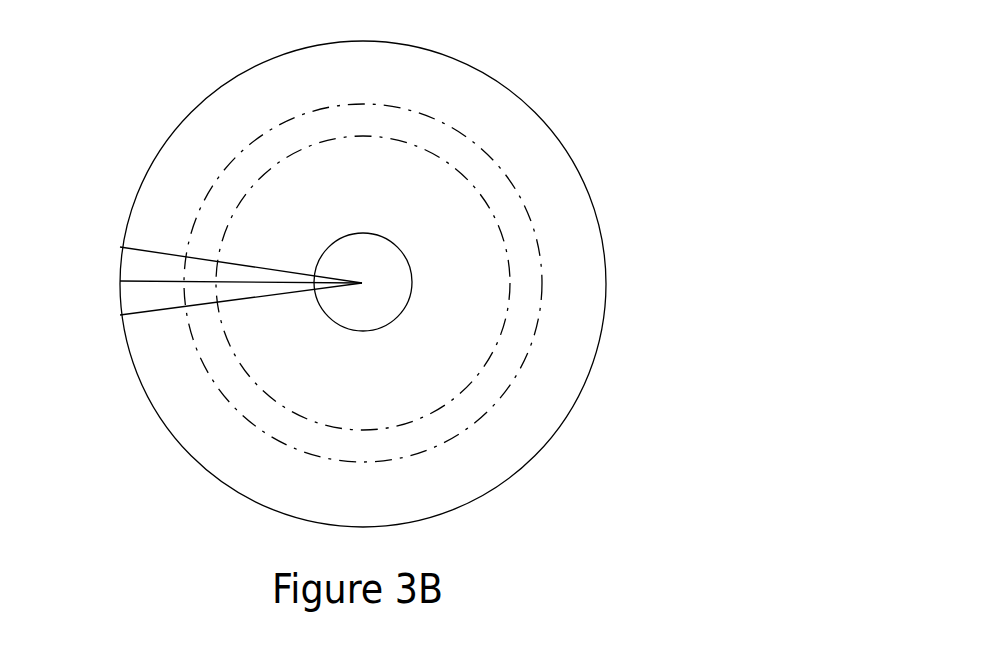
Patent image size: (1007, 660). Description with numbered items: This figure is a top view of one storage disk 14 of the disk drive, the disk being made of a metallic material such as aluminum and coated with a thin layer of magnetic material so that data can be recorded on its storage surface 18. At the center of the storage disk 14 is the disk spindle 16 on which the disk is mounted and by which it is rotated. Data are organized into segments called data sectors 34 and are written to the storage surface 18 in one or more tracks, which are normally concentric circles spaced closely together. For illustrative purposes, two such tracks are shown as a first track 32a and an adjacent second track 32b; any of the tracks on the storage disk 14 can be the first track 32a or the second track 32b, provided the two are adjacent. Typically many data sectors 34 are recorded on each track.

The storage disk 14 is at (492, 70).
The disk spindle 16 is at (375, 267).
The storage surface 18 is at (407, 492).
The first track 32a is at (242, 145).
The second track 32b is at (222, 343).
The data sector 34 is at (150, 265).